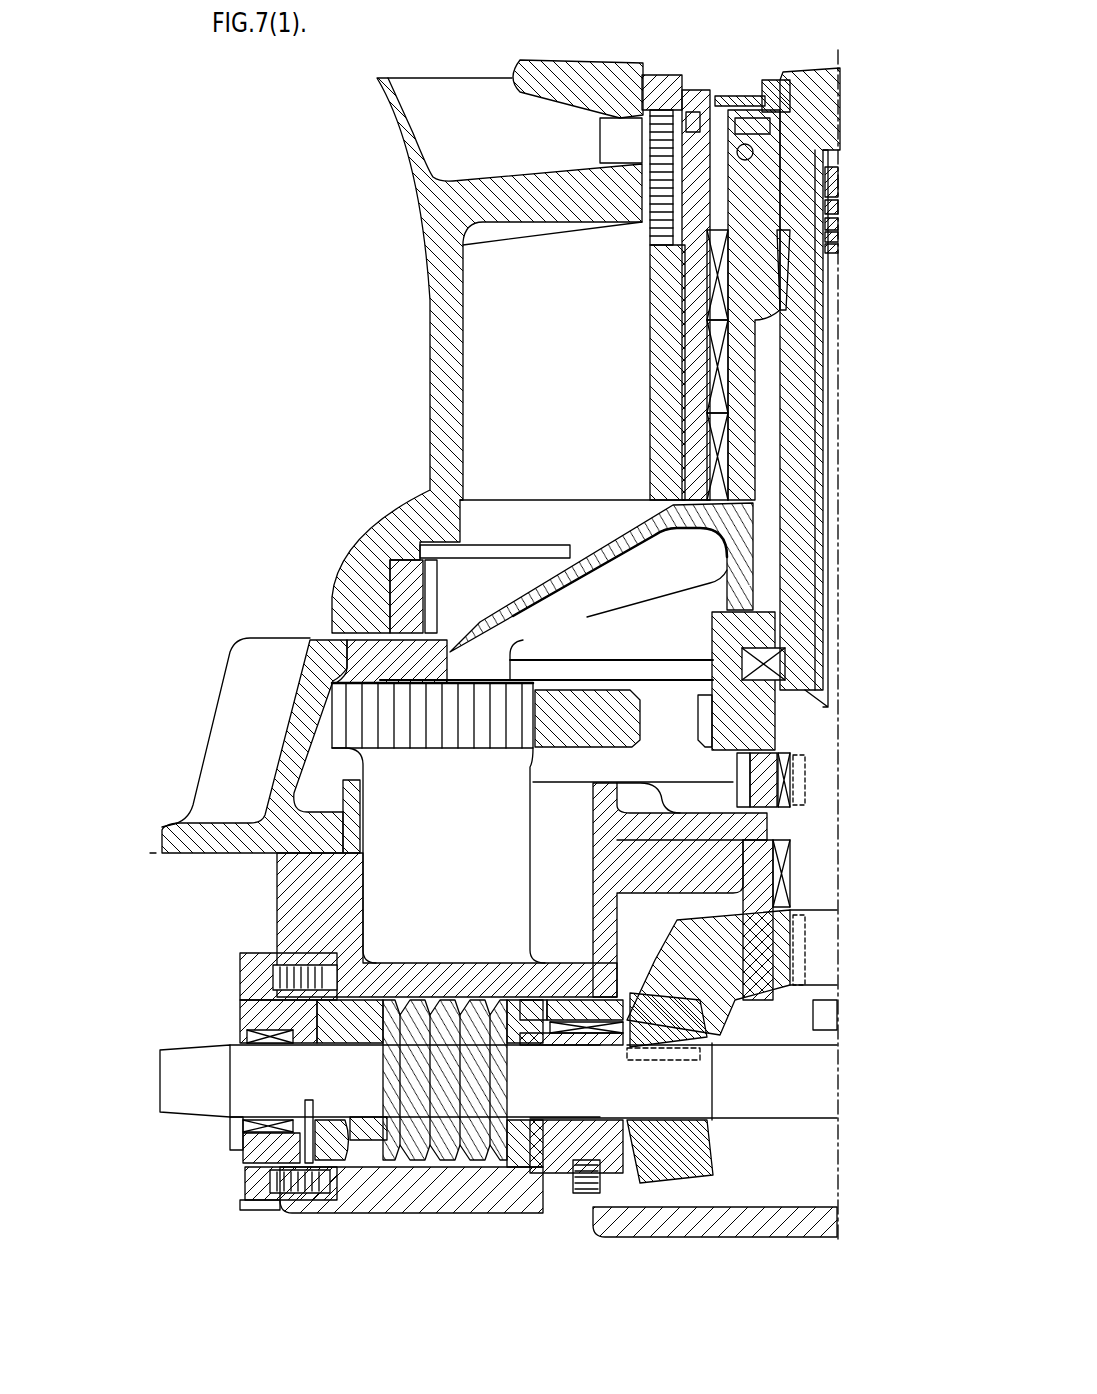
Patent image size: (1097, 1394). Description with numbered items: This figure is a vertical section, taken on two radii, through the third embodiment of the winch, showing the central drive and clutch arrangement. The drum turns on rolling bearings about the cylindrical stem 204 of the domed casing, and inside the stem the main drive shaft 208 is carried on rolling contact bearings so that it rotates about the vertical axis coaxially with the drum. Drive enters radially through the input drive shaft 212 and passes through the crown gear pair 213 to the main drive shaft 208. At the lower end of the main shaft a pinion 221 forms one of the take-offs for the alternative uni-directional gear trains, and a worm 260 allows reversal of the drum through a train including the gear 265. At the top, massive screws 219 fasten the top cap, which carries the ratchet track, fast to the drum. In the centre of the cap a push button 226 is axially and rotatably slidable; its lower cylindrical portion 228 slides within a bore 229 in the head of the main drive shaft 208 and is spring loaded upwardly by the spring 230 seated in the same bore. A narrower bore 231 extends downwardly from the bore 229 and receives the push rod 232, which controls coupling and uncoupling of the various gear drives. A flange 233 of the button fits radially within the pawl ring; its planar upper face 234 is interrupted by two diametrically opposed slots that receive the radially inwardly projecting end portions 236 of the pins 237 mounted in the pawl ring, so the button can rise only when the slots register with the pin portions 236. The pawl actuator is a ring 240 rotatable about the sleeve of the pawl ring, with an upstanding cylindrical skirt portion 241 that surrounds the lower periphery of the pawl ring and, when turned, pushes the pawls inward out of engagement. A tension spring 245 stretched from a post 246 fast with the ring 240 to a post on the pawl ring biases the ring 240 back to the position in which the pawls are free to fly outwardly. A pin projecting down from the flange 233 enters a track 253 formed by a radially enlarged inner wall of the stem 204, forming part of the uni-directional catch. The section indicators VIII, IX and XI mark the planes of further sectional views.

The cylindrical stem 204 is at (620, 540).
The main drive shaft 208 is at (813, 580).
The input drive shaft 212 is at (163, 1103).
The crown gear pair 213 is at (717, 977).
The massive screws 219 is at (727, 207).
The pinion 221 is at (785, 810).
The push button 226 is at (807, 100).
The lower cylindrical portion 228 is at (838, 200).
The bore 229 is at (838, 232).
The spring 230 is at (838, 246).
The narrower bore 231 is at (818, 493).
The push rod 232 is at (827, 458).
The flange 233 is at (787, 140).
The planar upper face 234 is at (753, 97).
The end portions of pins 236 is at (745, 135).
The pins 237 is at (727, 203).
The ring 240 is at (838, 185).
The upstanding cylindrical skirt portion 241 is at (735, 147).
The tension spring 245 is at (767, 147).
The post 246 is at (700, 163).
The track 253 is at (838, 218).
The worm 260 is at (455, 1160).
The gear 265 is at (347, 712).
The section line VIII is at (643, 218).
The section line IX is at (690, 122).
The section line XI is at (243, 1000).